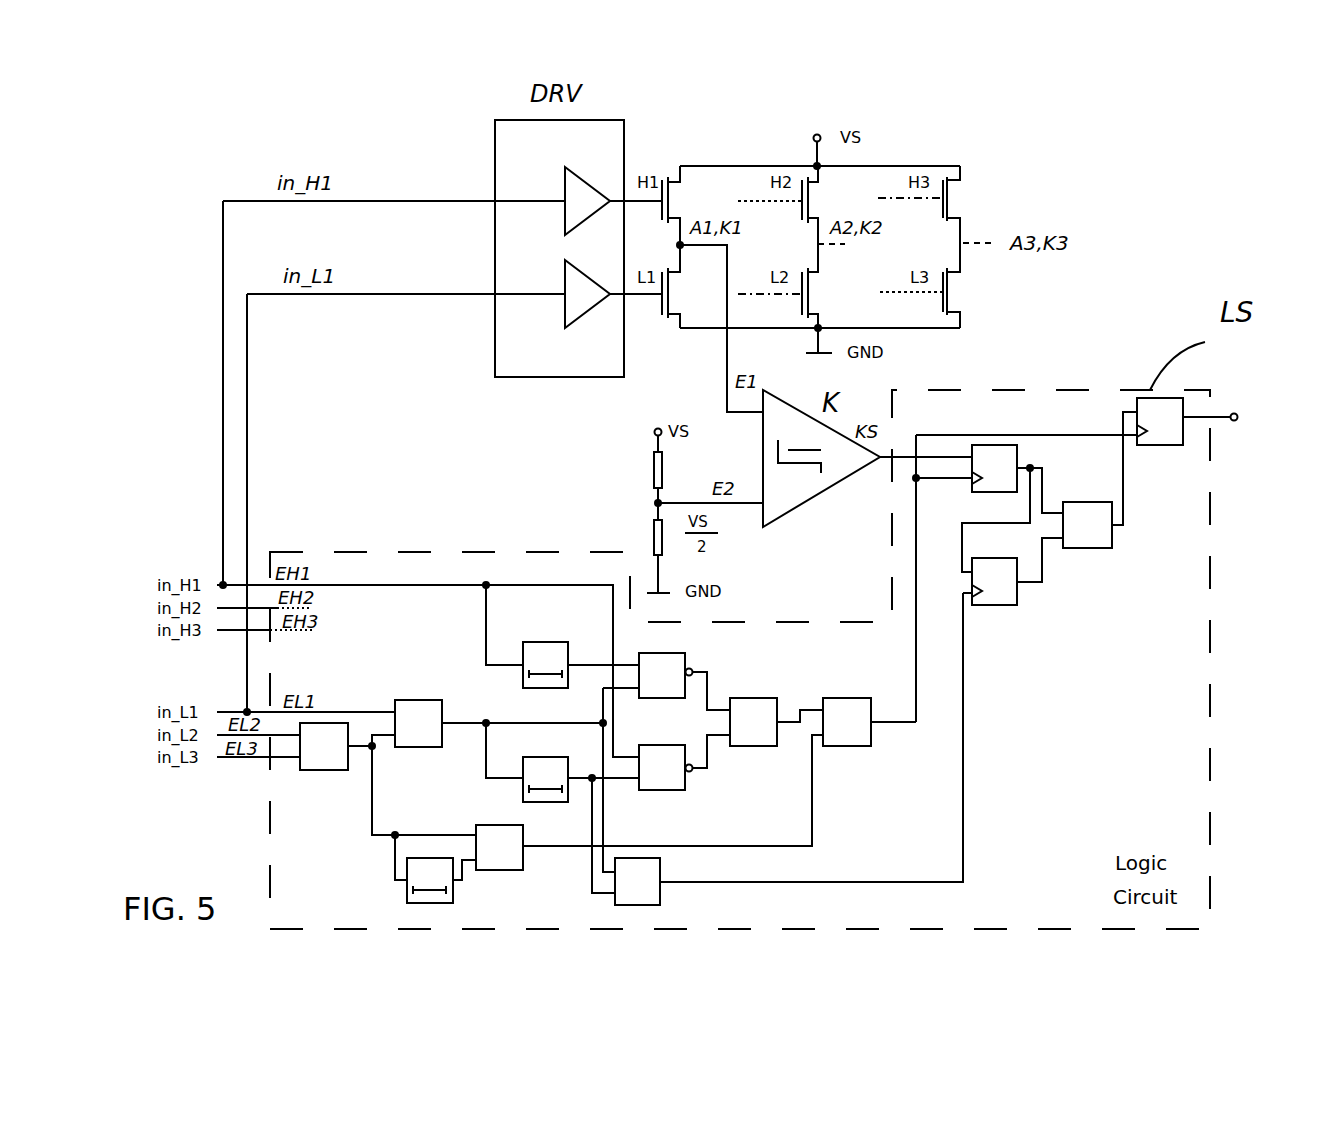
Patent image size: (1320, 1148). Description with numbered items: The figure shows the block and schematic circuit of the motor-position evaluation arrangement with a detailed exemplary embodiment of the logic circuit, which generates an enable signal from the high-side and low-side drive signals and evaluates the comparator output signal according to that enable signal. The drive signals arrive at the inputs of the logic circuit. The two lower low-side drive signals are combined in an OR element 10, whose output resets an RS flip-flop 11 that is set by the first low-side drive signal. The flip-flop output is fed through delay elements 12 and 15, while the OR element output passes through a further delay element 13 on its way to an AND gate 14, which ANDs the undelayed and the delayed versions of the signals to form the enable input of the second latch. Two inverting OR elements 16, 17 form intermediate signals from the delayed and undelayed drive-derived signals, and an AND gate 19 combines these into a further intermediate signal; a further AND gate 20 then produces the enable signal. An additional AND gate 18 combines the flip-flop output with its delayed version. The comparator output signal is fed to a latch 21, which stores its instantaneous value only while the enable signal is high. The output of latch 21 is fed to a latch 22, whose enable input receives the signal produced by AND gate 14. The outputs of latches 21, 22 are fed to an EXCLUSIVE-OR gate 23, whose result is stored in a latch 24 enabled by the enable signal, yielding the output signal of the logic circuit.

The OR element 10 is at (320, 776).
The RS flip-flop 11 is at (411, 688).
The delay element 12 is at (541, 637).
The delay element 13 is at (393, 898).
The AND gate 14 is at (527, 884).
The delay element 15 is at (562, 808).
The inverting OR element 16 is at (666, 751).
The inverting OR element 17 is at (684, 755).
The AND gate 18 is at (637, 895).
The AND gate 19 is at (776, 708).
The AND gate 20 is at (869, 708).
The latch 21 is at (1012, 504).
The latch 22 is at (861, 710).
The EXCLUSIVE-OR gate 23 is at (1107, 482).
The latch 24 is at (1207, 434).